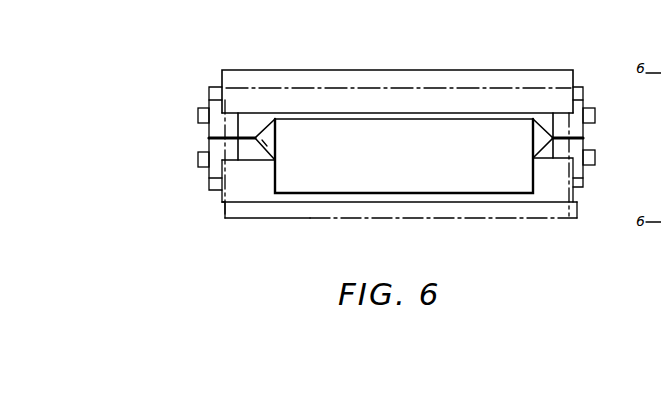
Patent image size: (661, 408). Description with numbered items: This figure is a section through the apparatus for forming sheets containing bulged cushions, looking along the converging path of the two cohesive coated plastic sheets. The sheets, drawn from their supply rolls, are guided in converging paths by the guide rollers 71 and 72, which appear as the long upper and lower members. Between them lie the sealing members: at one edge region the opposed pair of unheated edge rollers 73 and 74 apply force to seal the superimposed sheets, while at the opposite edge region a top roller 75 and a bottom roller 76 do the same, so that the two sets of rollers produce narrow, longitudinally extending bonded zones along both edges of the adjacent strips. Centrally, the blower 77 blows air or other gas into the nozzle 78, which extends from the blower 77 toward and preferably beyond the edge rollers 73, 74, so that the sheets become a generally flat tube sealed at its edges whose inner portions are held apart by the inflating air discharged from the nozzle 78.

The guide roller 71 is at (555, 86).
The guide roller 72 is at (563, 190).
The edge roller 73 is at (586, 129).
The edge roller 74 is at (584, 144).
The top roller 75 is at (212, 125).
The bottom roller 76 is at (212, 163).
The blower 77 is at (472, 178).
The nozzle 78 is at (268, 143).